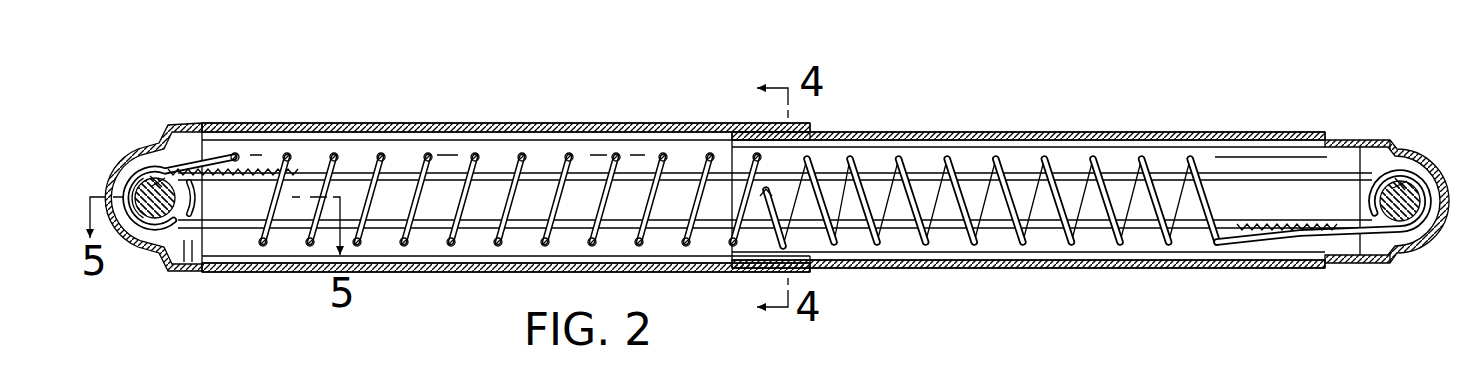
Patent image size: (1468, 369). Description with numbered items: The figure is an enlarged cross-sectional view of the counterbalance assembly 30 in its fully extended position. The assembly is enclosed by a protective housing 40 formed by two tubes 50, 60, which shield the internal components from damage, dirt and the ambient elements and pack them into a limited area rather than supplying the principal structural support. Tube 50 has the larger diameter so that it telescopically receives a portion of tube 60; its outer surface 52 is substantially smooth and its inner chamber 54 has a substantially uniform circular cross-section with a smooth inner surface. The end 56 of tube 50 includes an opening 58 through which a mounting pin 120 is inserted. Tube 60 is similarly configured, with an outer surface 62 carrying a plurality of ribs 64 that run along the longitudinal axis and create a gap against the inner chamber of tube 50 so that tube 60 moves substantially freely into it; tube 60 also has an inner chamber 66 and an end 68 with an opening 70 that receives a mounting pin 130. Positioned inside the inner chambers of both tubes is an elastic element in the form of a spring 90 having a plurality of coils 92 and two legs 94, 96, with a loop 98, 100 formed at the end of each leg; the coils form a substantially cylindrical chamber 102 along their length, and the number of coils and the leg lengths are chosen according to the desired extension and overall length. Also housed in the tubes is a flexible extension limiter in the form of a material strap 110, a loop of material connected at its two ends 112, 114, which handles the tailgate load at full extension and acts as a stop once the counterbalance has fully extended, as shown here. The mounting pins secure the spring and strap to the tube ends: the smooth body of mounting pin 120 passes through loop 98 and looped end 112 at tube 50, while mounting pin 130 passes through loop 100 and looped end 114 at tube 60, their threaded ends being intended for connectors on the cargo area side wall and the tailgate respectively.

The counterbalance assembly 30 is at (553, 74).
The protective housing 40 is at (675, 110).
The tube 50 is at (506, 161).
The outer surface 52 is at (365, 123).
The inner chamber 54 is at (493, 138).
The end 56 is at (143, 142).
The opening 58 is at (162, 207).
The tube 60 is at (1029, 161).
The outer surface 62 is at (1053, 138).
The ribs 64 is at (990, 132).
The inner chamber 66 is at (1170, 157).
The end 68 is at (1420, 252).
The opening 70 is at (1397, 212).
The spring 90 is at (1094, 198).
The coils 92 is at (443, 203).
The leg 94 is at (223, 152).
The leg 96 is at (1322, 201).
The loop 98 is at (190, 208).
The loop 100 is at (1367, 187).
The cylindrical chamber 102 is at (580, 183).
The material strap 110 is at (877, 168).
The looped end 112 is at (135, 178).
The looped end 114 is at (1380, 228).
The mounting pin 120 is at (163, 185).
The mounting pin 130 is at (1407, 190).